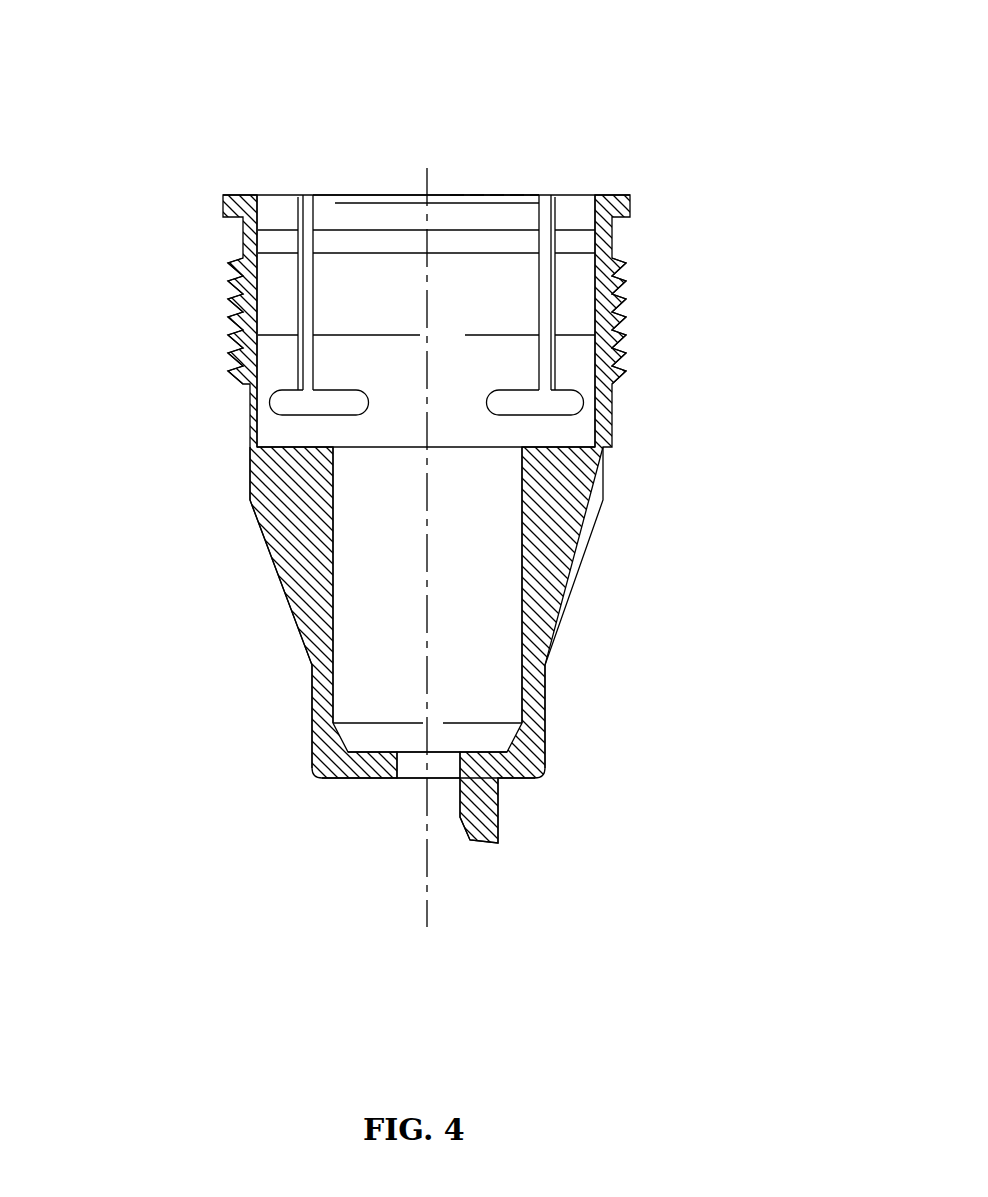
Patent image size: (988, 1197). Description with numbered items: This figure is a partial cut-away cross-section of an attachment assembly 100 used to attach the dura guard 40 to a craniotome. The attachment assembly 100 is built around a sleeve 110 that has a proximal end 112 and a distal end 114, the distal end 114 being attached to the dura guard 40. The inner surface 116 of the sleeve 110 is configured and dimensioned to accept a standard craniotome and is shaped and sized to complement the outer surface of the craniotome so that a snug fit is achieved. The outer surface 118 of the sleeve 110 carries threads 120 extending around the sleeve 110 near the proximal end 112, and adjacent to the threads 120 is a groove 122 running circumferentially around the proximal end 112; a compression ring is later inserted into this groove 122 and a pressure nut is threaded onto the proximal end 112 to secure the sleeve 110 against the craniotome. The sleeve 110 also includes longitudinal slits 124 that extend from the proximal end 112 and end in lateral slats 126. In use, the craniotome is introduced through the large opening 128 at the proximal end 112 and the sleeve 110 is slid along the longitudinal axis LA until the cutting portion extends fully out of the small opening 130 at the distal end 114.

The attachment assembly 100 is at (247, 122).
The proximal end 112 is at (630, 196).
The groove 122 is at (240, 245).
The threads 120 is at (236, 333).
The outer surface 118 is at (246, 463).
The inner surface 116 is at (517, 530).
The sleeve 110 is at (548, 590).
The distal end 114 is at (318, 752).
The dura guard 40 is at (488, 808).
The small opening 130 is at (416, 770).
The large opening 128 is at (360, 192).
The longitudinal slits 124 is at (548, 365).
The lateral slats 126 is at (527, 403).
The longitudinal axis LA is at (427, 613).